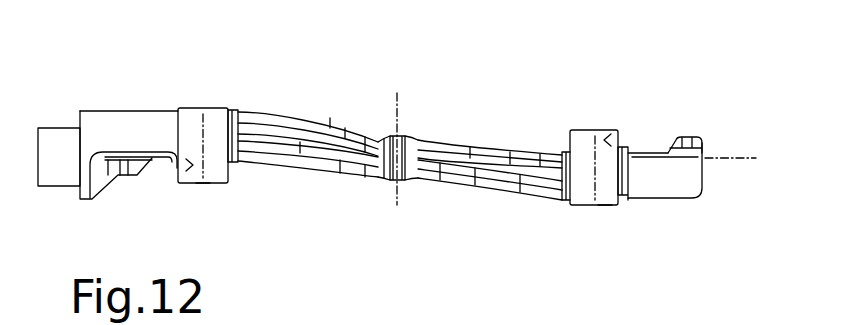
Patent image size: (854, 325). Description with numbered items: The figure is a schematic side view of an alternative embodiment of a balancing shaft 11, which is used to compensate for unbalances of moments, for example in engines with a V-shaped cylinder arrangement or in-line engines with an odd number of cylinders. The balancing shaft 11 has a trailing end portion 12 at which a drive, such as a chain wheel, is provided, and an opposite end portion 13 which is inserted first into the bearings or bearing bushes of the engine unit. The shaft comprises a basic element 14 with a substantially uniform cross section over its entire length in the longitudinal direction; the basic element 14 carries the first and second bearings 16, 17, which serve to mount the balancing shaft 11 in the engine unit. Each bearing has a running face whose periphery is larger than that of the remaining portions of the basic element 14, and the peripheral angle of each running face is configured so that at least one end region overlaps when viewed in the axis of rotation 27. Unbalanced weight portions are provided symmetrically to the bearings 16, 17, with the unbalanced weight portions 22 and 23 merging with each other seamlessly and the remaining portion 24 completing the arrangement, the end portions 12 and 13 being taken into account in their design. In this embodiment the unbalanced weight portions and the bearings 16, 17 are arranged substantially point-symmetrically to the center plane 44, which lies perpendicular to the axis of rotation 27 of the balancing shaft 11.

The balancing shaft 11 is at (520, 67).
The trailing end portion 12 is at (57, 106).
The end portion 13 is at (713, 126).
The basic element 14 is at (324, 186).
The first bearing 16 is at (203, 189).
The second bearing 17 is at (608, 209).
The unbalanced weight portion 22 is at (288, 107).
The unbalanced weight portion 23 is at (506, 128).
The unbalanced weight portion 24 is at (489, 203).
The axis of rotation 27 is at (748, 162).
The center plane 44 is at (398, 105).